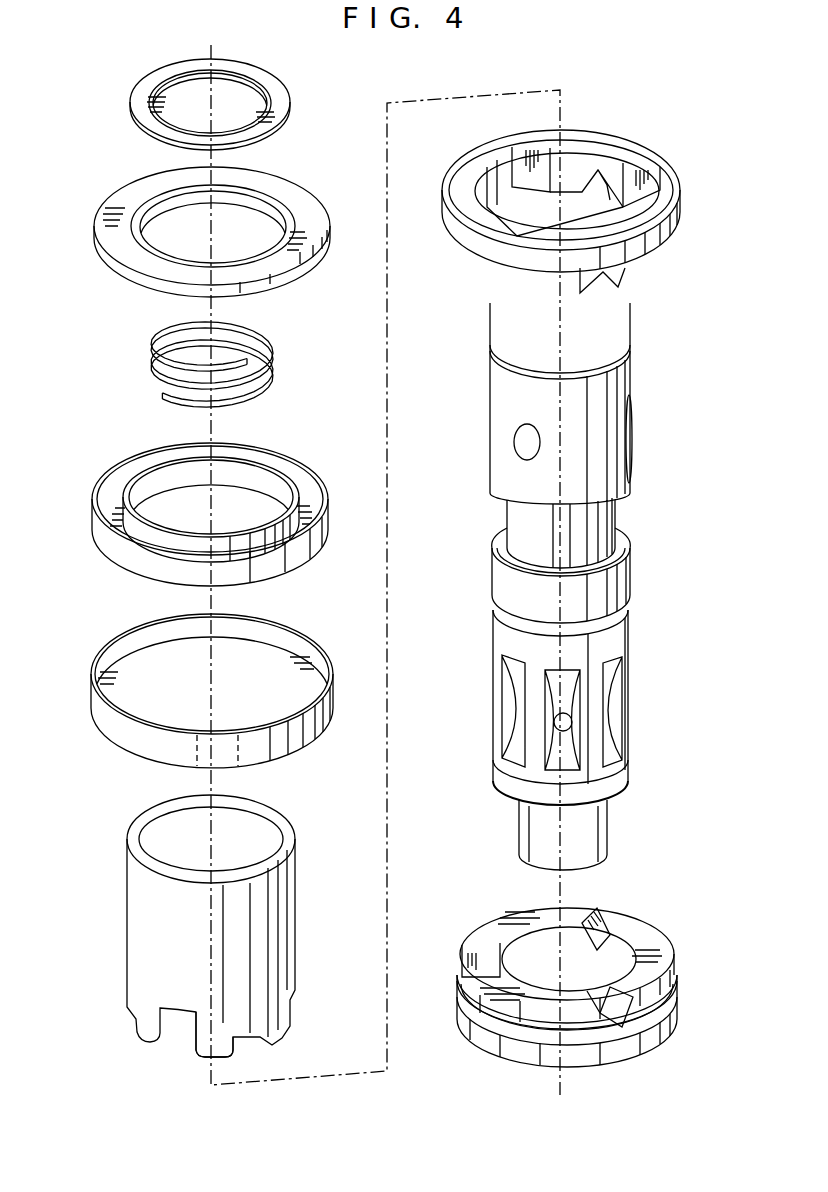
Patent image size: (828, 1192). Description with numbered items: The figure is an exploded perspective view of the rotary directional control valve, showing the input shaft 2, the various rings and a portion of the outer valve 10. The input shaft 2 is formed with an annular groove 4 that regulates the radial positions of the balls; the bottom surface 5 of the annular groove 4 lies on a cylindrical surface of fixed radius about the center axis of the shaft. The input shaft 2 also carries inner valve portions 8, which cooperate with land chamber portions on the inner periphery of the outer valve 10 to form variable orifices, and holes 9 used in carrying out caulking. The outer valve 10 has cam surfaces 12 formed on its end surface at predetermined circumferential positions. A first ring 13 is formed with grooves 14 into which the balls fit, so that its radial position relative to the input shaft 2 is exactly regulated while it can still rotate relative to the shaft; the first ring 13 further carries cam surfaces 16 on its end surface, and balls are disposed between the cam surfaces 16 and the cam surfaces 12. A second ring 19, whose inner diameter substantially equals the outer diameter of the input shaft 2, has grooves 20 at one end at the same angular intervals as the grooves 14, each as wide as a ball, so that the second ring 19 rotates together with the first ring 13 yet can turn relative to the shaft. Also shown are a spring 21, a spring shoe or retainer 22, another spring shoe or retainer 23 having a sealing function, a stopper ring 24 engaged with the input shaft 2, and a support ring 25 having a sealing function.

The input shaft 2 is at (560, 586).
The annular groove 4 is at (617, 503).
The bottom surface 5 is at (617, 510).
The inner valve portions 8 is at (520, 692).
The holes 9 is at (520, 438).
The outer valve 10 is at (560, 973).
The cam surfaces 12 is at (473, 955).
The first ring 13 is at (580, 211).
The grooves 14 is at (527, 145).
The cam surfaces 16 is at (607, 183).
The second ring 19 is at (140, 918).
The grooves 20 is at (190, 1030).
The spring 21 is at (157, 342).
The spring shoe 22 is at (130, 258).
The spring shoe 23 is at (110, 545).
The stopper ring 24 is at (147, 118).
The support ring 25 is at (107, 718).